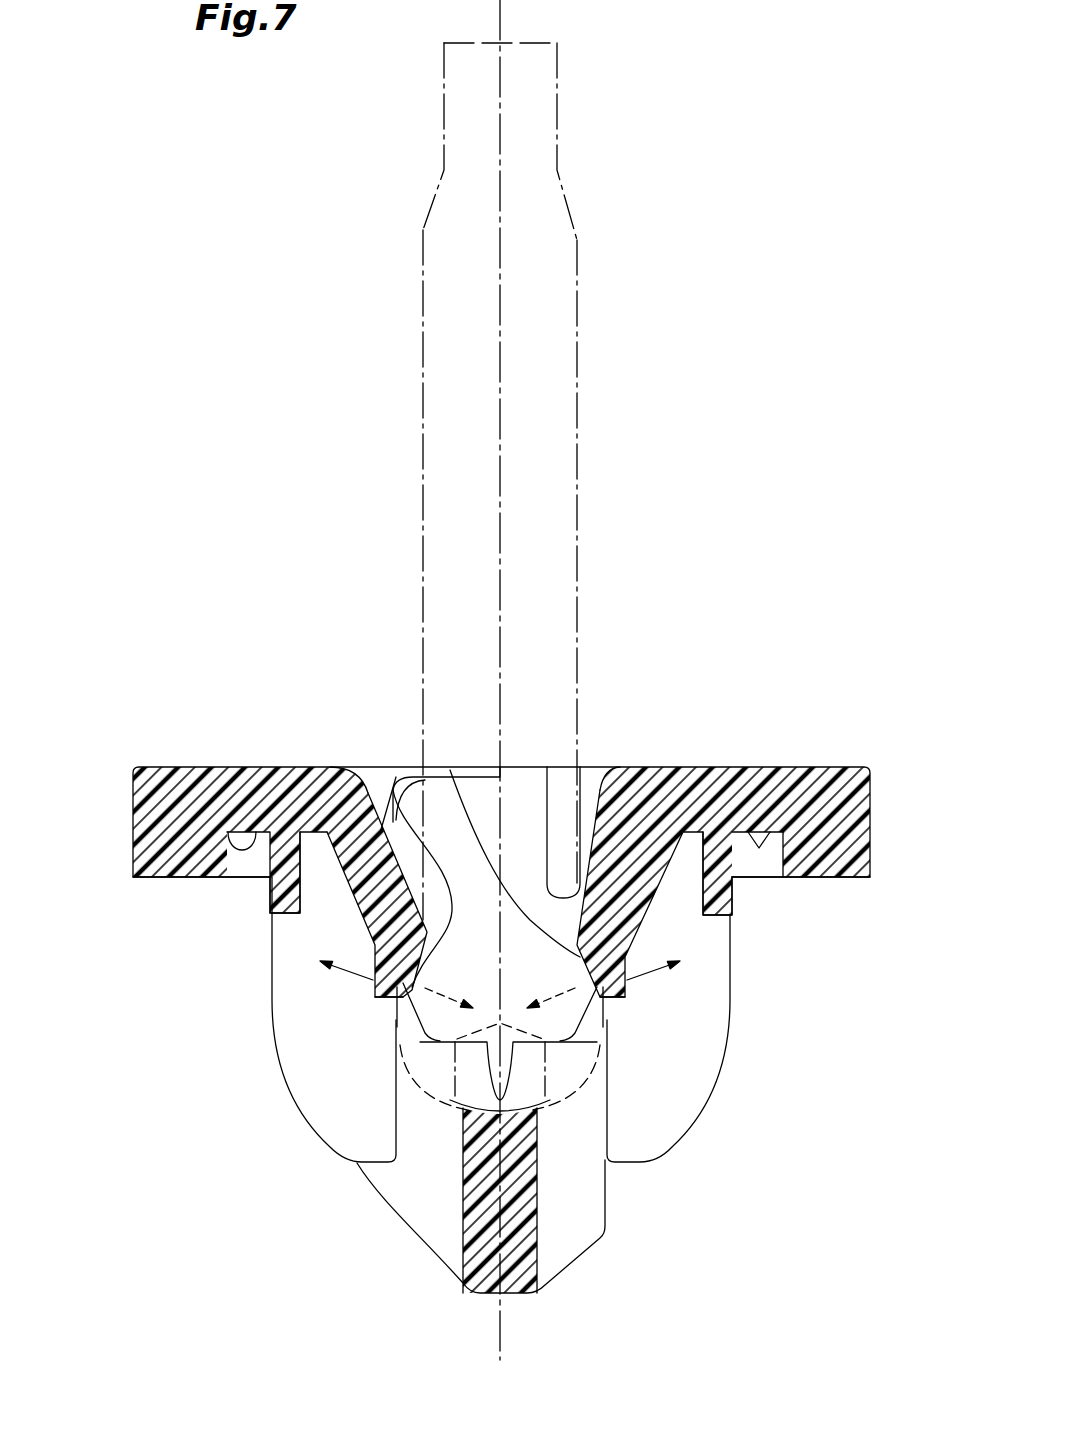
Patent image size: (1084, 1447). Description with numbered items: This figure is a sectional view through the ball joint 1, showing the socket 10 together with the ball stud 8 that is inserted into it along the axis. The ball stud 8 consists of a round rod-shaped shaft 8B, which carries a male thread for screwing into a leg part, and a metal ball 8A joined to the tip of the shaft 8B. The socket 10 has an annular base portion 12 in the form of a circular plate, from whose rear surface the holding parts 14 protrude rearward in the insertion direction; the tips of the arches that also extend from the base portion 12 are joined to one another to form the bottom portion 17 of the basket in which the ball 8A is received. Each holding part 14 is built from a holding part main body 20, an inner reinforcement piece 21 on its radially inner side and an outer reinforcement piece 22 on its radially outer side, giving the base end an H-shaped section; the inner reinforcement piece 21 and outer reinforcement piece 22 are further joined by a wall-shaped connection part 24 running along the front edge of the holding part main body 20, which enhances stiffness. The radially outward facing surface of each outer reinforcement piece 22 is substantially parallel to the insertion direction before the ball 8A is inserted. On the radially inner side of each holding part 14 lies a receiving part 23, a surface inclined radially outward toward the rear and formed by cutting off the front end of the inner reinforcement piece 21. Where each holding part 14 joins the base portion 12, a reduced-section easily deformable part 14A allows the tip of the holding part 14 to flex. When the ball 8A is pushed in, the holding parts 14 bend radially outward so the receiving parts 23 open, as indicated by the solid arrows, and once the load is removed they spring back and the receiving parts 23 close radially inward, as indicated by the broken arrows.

The ball joint 1 is at (722, 692).
The ball stud 8 is at (567, 203).
The ball 8A is at (578, 1087).
The shaft 8B is at (578, 365).
The socket 10 is at (837, 767).
The base portion 12 is at (147, 833).
The holding part 14 is at (373, 917).
The easily deformable part 14A is at (262, 773).
The bottom portion 17 is at (513, 1287).
The holding part main body 20 is at (318, 1080).
The inner reinforcement piece 21 is at (373, 992).
The outer reinforcement piece 22 is at (277, 892).
The receiving part 23 is at (450, 770).
The connection part 24 is at (332, 767).